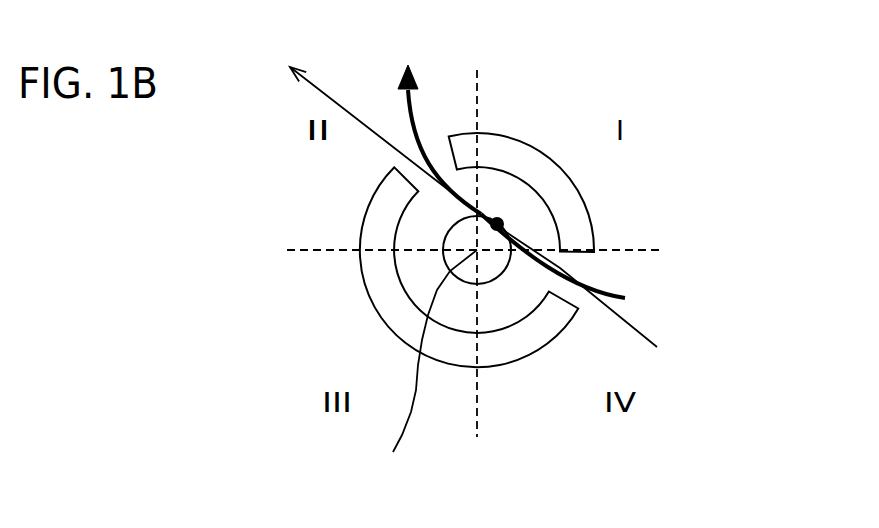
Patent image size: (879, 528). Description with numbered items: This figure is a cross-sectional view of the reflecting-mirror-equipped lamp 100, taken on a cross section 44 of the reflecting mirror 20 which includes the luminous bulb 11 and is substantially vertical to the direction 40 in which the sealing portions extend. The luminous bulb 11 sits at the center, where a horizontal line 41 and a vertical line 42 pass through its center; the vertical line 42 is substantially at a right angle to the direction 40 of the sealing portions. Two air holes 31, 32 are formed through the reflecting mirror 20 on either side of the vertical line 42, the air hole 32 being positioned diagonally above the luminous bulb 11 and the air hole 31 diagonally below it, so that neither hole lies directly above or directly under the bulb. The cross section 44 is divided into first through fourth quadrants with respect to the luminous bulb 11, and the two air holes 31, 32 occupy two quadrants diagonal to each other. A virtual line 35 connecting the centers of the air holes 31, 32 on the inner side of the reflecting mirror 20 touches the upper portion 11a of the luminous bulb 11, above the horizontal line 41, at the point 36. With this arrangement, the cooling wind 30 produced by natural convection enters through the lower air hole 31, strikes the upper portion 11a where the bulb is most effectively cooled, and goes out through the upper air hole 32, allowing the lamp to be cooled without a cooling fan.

The reflecting-mirror-equipped lamp 100 is at (670, 100).
The luminous bulb 11 is at (443, 265).
The upper portion of the luminous bulb 11a is at (485, 213).
The reflecting mirror 20 is at (395, 313).
The cooling wind 30 is at (610, 290).
The air hole 31 is at (588, 272).
The air hole 32 is at (435, 145).
The virtual line 35 is at (642, 337).
The point 36 is at (500, 220).
The direction 40 is at (424, 371).
The horizontal line 41 is at (307, 250).
The vertical line 42 is at (477, 397).
The cross section 44 is at (469, 362).